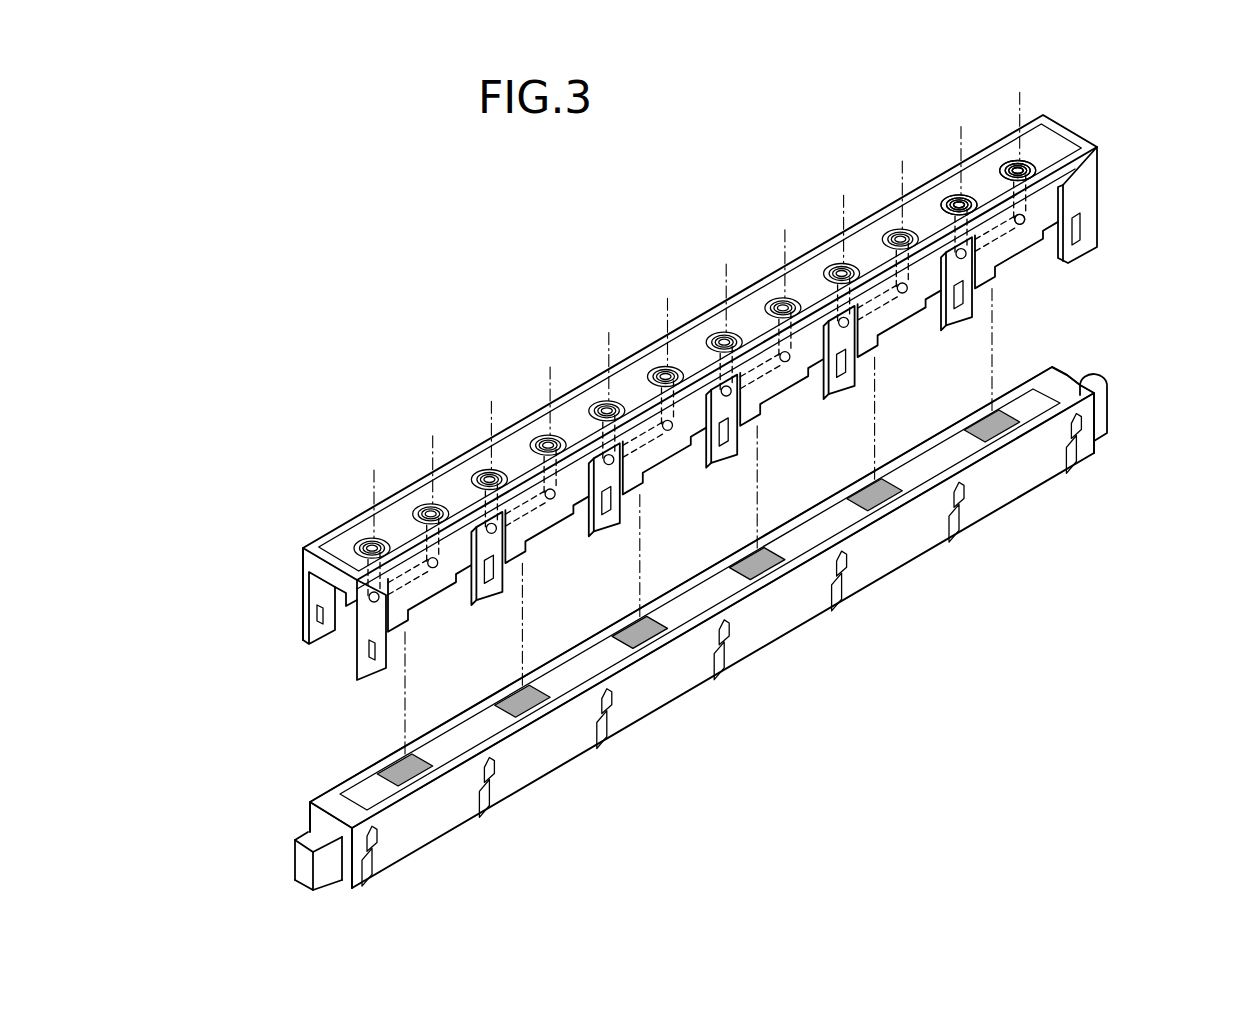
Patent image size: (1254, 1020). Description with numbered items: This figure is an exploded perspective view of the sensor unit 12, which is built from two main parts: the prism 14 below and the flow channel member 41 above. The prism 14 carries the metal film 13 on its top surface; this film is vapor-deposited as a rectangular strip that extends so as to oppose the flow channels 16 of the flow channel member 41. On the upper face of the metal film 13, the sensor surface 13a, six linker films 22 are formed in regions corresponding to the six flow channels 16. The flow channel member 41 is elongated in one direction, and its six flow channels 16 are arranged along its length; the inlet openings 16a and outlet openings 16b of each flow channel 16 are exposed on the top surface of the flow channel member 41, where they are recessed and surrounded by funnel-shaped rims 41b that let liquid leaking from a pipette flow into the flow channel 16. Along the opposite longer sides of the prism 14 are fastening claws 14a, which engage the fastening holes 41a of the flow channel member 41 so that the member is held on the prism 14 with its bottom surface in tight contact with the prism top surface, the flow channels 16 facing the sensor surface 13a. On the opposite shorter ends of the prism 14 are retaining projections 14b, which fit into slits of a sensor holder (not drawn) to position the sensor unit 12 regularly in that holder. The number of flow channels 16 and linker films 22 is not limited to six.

The sensor unit 12 is at (722, 404).
The metal film 13 is at (346, 783).
The sensor surface 13a is at (600, 662).
The prism 14 is at (694, 628).
The fastening claws 14a is at (374, 838).
The retaining projections 14b is at (1105, 422).
The flow channels 16 is at (1021, 230).
The inlet openings 16a is at (1019, 170).
The outlet openings 16b is at (962, 206).
The linker films 22 is at (905, 485).
The flow channel member 41 is at (1125, 160).
The fastening holes 41a is at (322, 640).
The funnel-shaped rims 41b is at (958, 208).